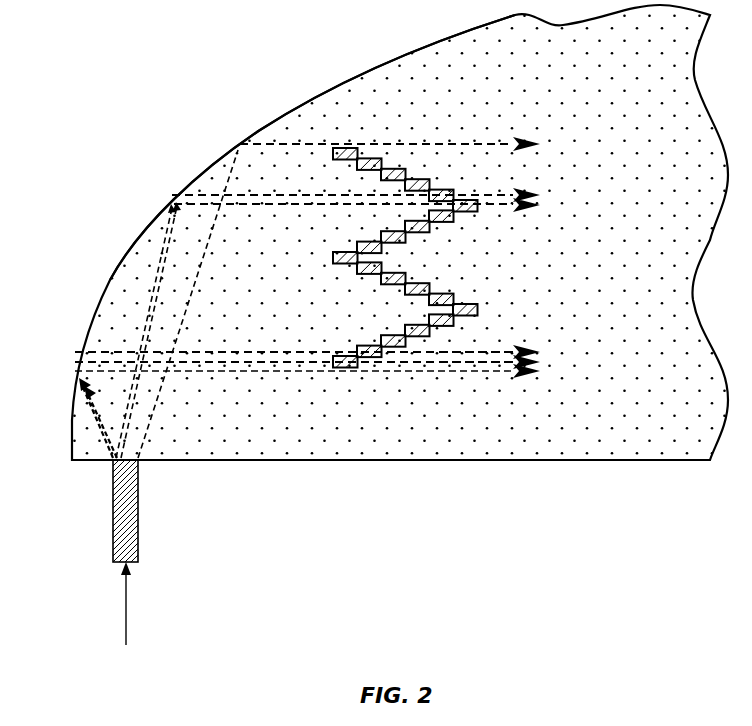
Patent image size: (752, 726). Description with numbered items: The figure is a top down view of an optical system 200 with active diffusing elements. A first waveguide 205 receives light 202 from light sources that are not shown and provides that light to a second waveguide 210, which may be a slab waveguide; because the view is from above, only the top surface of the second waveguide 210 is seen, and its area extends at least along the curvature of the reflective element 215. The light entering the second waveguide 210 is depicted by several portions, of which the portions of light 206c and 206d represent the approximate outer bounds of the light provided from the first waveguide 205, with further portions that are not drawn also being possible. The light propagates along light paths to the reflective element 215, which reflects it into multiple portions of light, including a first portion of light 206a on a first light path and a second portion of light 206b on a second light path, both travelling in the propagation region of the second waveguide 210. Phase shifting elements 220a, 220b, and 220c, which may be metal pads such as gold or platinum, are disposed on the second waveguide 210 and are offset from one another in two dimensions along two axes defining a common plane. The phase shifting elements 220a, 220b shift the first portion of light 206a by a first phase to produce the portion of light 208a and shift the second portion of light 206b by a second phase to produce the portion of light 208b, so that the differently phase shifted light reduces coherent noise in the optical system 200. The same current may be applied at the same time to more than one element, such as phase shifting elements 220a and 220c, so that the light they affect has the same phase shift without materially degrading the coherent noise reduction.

The optical system 200 is at (88, 73).
The light 202 is at (127, 607).
The first waveguide 205 is at (140, 499).
The portion of light 206a is at (298, 364).
The portion of light 206b is at (232, 354).
The portion of light 206c is at (84, 395).
The portion of light 206d is at (238, 152).
The portion of light 208a is at (430, 365).
The portion of light 208b is at (498, 354).
The second waveguide 210 is at (89, 308).
The reflective element 215 is at (292, 111).
The phase shifting element 220a is at (340, 370).
The phase shifting element 220b is at (378, 358).
The phase shifting element 220c is at (340, 147).